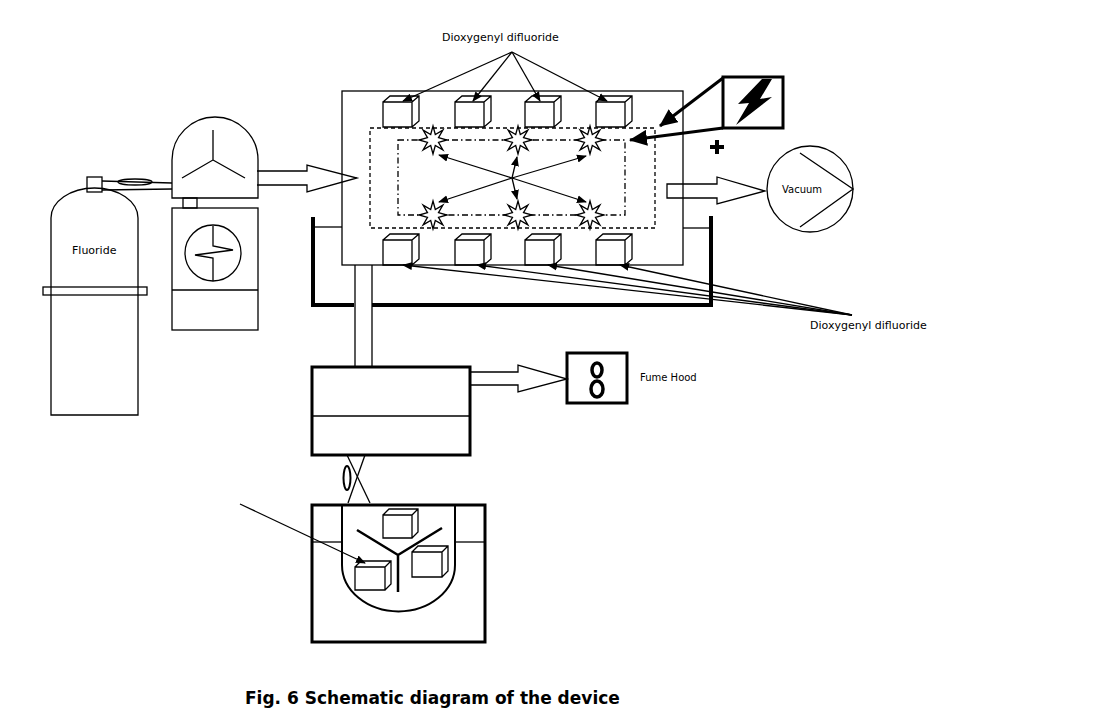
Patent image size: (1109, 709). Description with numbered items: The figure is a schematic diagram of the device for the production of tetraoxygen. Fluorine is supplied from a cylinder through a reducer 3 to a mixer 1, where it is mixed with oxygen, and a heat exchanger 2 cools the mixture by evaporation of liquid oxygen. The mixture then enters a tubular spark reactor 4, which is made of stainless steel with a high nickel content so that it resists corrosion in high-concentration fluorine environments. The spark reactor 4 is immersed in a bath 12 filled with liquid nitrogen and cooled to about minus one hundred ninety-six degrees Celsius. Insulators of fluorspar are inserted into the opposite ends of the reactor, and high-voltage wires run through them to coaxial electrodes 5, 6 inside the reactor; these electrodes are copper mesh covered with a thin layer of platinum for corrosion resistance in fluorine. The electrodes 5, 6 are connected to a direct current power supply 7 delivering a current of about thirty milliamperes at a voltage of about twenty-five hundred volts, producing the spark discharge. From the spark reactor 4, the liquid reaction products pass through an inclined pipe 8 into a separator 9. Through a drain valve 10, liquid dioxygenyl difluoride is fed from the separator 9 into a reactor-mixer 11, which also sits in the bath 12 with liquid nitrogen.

The mixer 1 is at (212, 117).
The heat exchanger 2 is at (257, 238).
The reducer 3 is at (137, 178).
The tubular spark reactor 4 is at (682, 88).
The coaxial electrode 5 is at (367, 127).
The coaxial electrode 6 is at (397, 177).
The direct current power supply 7 is at (784, 77).
The inclined pipe 8 is at (373, 318).
The separator 9 is at (311, 410).
The drain valve 10 is at (342, 477).
The reactor-mixer 11 is at (459, 527).
The bath 12 is at (714, 263).